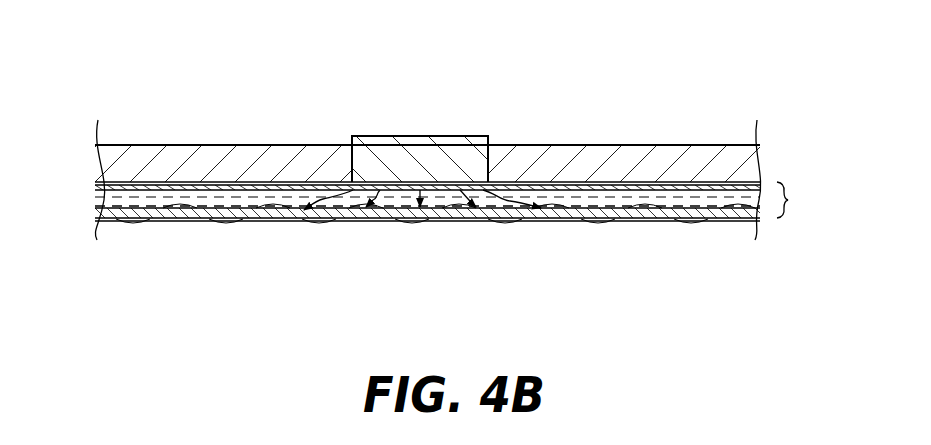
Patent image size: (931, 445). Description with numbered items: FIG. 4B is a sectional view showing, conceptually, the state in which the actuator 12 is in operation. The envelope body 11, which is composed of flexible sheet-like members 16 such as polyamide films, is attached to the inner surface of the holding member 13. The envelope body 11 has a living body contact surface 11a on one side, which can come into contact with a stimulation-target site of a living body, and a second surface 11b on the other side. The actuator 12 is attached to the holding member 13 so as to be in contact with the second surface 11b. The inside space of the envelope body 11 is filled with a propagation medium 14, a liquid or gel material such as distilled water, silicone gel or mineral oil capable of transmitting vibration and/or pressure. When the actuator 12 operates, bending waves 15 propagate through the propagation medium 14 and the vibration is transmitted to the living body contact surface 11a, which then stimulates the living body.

The envelope body 11 is at (794, 200).
The living body contact surface 11a is at (246, 219).
The second surface 11b is at (253, 184).
The actuator 12 is at (407, 142).
The holding member 13 is at (565, 160).
The propagation medium 14 is at (561, 205).
The bending waves 15 is at (330, 199).
The sheet-like members 16 is at (667, 185).